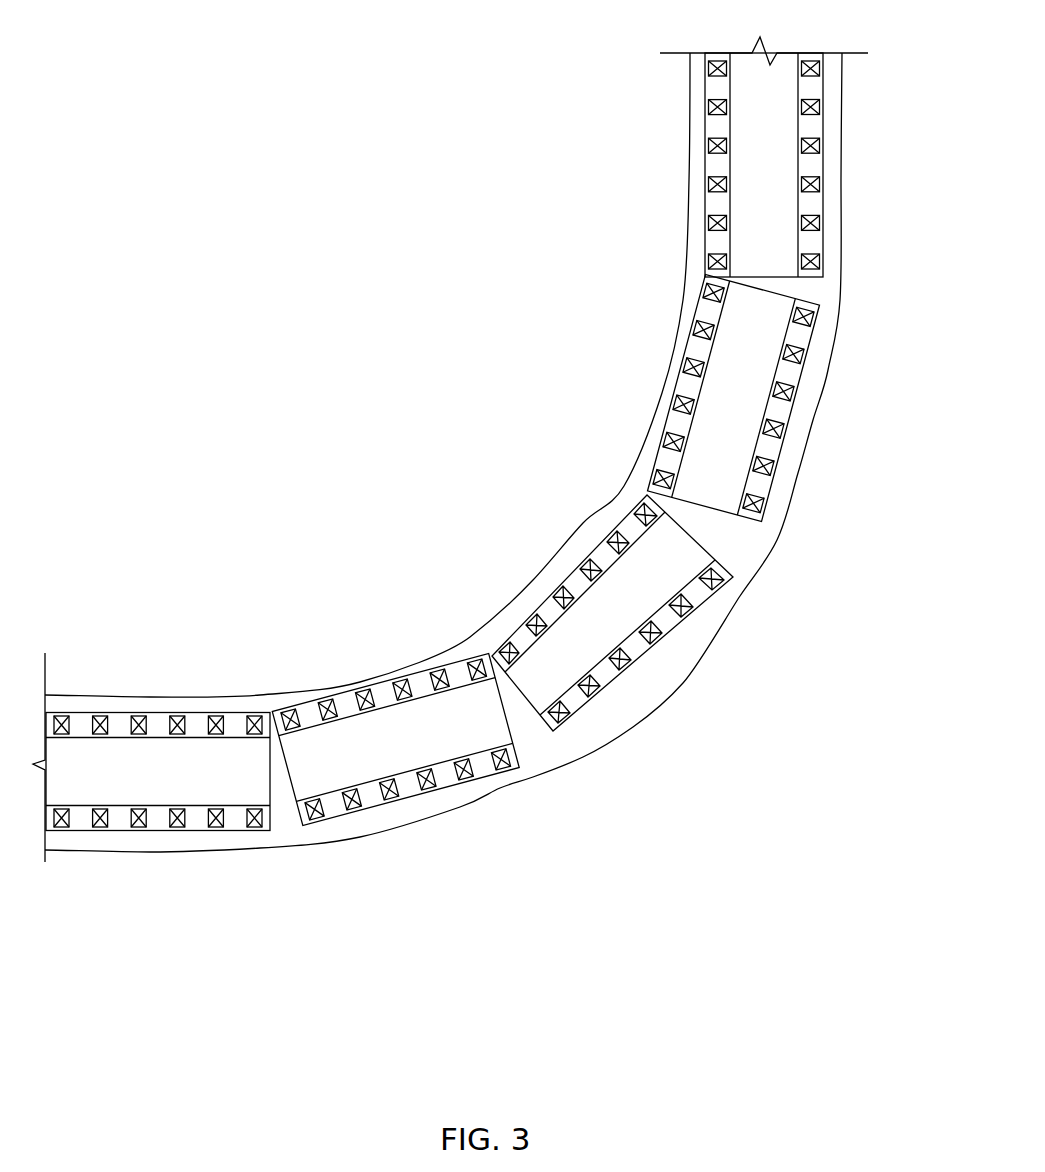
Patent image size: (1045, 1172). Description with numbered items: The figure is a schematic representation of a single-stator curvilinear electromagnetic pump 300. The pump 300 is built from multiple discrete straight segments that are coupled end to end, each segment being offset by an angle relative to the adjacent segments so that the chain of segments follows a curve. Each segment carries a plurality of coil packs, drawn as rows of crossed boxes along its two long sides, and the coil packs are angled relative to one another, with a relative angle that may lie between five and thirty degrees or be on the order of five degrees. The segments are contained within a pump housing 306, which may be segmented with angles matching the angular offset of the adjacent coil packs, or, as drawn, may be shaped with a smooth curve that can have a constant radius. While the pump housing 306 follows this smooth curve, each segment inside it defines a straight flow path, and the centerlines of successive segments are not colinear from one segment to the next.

The curvilinear electromagnetic pump 300 is at (415, 245).
The pump housing 306 is at (798, 473).